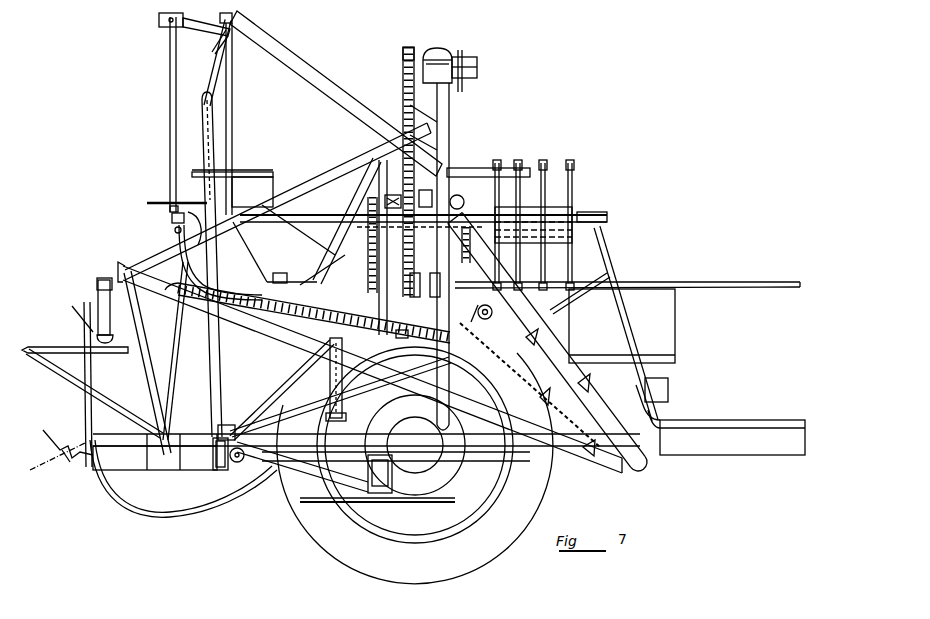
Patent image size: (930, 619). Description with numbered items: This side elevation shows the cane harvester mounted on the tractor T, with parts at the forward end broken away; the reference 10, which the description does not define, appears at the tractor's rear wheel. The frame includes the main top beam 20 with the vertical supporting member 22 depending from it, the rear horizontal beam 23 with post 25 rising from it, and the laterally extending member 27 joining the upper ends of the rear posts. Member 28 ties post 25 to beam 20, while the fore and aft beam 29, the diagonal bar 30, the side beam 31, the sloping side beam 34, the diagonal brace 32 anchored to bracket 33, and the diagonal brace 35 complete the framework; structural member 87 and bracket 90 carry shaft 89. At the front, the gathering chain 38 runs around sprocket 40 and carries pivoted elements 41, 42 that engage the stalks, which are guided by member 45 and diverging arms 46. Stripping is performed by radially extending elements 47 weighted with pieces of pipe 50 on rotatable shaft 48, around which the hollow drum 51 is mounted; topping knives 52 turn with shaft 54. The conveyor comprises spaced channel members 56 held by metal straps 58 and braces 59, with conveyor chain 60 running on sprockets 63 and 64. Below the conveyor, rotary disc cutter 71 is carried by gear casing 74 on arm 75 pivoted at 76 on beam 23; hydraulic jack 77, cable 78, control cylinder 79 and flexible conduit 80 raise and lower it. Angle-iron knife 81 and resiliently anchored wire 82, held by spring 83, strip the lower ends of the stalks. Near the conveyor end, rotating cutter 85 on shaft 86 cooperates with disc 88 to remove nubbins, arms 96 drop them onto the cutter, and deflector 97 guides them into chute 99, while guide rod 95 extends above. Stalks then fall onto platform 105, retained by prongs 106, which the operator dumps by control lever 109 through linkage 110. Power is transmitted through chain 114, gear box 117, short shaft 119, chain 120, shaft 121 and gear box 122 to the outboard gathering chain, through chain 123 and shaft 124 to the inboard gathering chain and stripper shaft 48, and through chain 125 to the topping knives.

The bracket 90 is at (188, 32).
The shaft 89 is at (169, 80).
The structural member 87 is at (232, 68).
The shaft 86 is at (233, 97).
The laterally extending member 27 is at (216, 135).
The post 25 is at (209, 351).
The radially extending arms 96 is at (250, 172).
The deflector 97 is at (275, 172).
The rotating cutter 85 is at (244, 186).
The disc 88 is at (158, 203).
The sprocket 64 is at (170, 223).
The side beam 34 is at (333, 165).
The cross-beam member 28 is at (312, 218).
The chute 99 is at (290, 241).
The sprocket 63 is at (282, 274).
The side beam 31 is at (140, 270).
The metal straps 58 is at (214, 318).
The conveyor chain 60 is at (270, 320).
The braces 59 is at (350, 333).
The channel members 56 is at (391, 333).
The control cylinder 79 is at (97, 293).
The control lever 109 is at (82, 330).
The diagonal brace 32 is at (147, 372).
The platform 105 is at (125, 430).
The angle iron knife 81 is at (290, 410).
The wire 82 is at (270, 404).
The hydraulic jack 77 is at (330, 387).
The cable 78 is at (362, 410).
The spring 83 is at (218, 431).
The pivot 76 is at (239, 463).
The rear horizontal beam 23 is at (220, 471).
The bracket 33 is at (190, 470).
The flexible conduit 80 is at (125, 497).
The arm 75 is at (302, 467).
The fore and aft horizontal beam 29 is at (525, 456).
The bar 30 is at (470, 450).
The gear casing 74 is at (388, 500).
The rotary disc-like cutter 71 is at (326, 504).
The wheel 10 is at (391, 353).
The gathering chain 38 is at (510, 378).
The sprocket 40 is at (492, 320).
The projection elements 41 is at (572, 385).
The projection elements 42 is at (588, 396).
The guiding member 45 is at (668, 390).
The tractor T is at (676, 327).
The rotatable shaft 48 is at (590, 220).
The stripping elements 47 is at (575, 190).
The pipe weights 50 is at (575, 163).
The hollow metallic drum 51 is at (536, 185).
The guide rod 95 is at (521, 244).
The chain 114 is at (477, 245).
The diverging arms 46 is at (490, 170).
The vertical supporting member 22 is at (452, 113).
The main top beam 20 is at (465, 84).
The knives 52 is at (478, 65).
The shaft 54 is at (437, 50).
The gear box 117 is at (452, 52).
The short shaft 119 is at (410, 50).
The chain 120 is at (402, 88).
The chain 125 is at (402, 102).
The diagonal brace 35 is at (400, 125).
The chain 123 is at (374, 243).
The shaft 124 is at (395, 275).
The shaft 121 is at (416, 275).
The gear box 122 is at (441, 286).
The prongs 106 is at (52, 458).
The linkage 110 is at (75, 462).